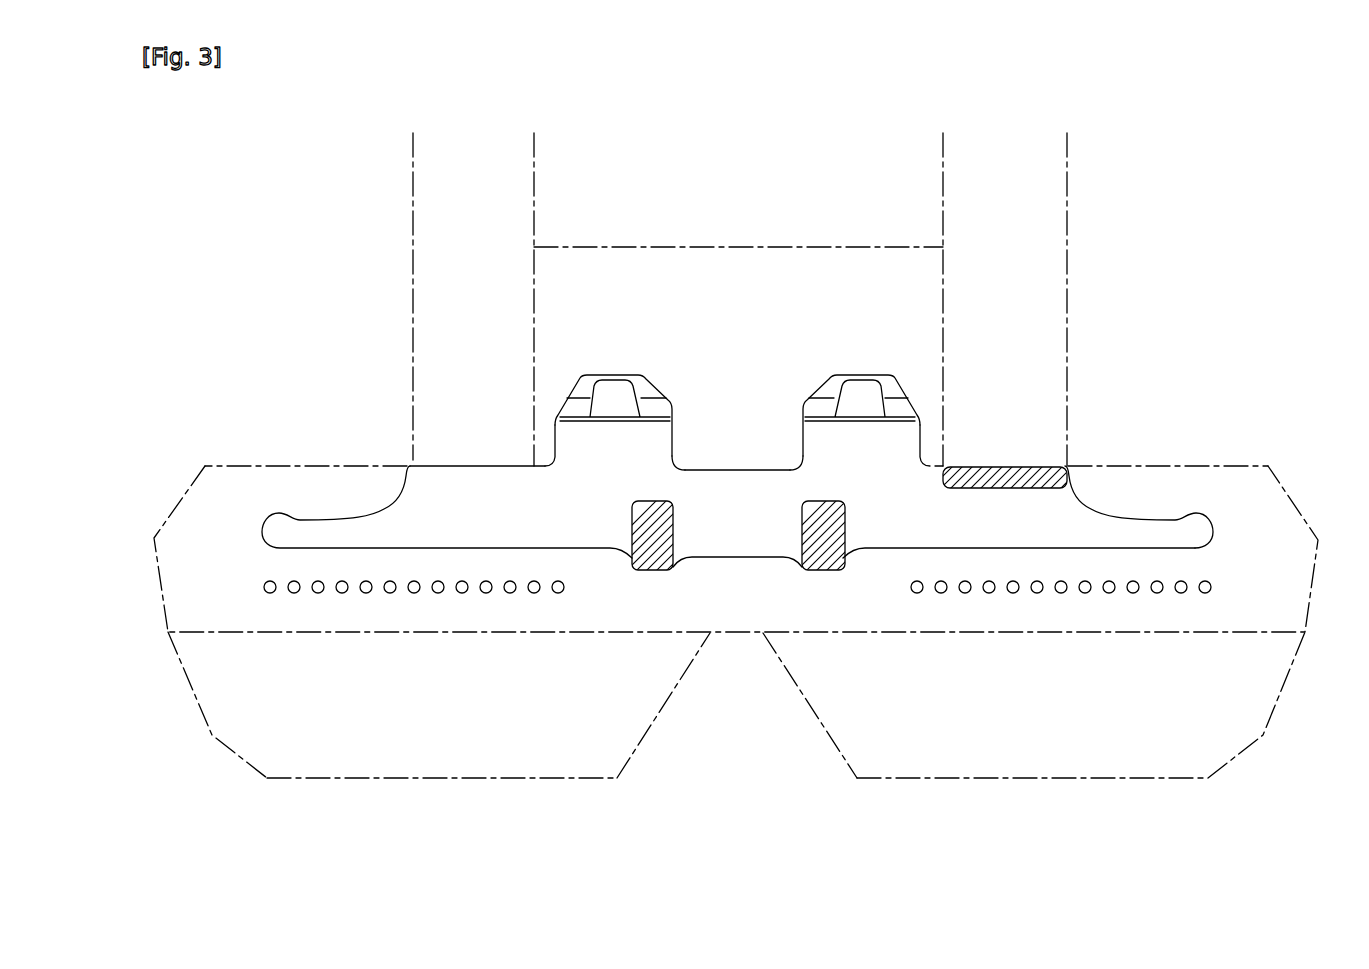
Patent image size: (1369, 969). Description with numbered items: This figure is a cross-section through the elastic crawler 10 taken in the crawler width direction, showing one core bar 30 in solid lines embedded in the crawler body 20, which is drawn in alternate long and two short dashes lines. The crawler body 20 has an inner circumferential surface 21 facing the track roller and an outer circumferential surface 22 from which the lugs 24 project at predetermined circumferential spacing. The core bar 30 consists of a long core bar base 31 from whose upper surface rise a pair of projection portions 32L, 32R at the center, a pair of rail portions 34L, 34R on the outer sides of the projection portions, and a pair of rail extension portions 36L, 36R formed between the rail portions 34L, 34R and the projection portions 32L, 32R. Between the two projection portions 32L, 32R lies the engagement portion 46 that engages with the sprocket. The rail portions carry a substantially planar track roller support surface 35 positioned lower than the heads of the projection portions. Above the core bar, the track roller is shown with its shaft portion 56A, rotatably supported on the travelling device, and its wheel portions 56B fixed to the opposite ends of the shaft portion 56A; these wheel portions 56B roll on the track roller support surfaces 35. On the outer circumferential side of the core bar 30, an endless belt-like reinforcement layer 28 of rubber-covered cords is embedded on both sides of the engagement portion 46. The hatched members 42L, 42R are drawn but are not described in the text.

The elastic crawler 10 is at (1145, 458).
The crawler body 20 is at (220, 458).
The inner circumferential surface 21 is at (284, 464).
The outer circumferential surface 22 is at (736, 744).
The lugs 24 is at (456, 780).
The reinforcement layer 28 is at (270, 594).
The core bar 30 is at (737, 419).
The core bar base 31 is at (1160, 518).
The projection portion 32L is at (606, 376).
The projection portion 32R is at (870, 376).
The rail portion 34L is at (453, 466).
The rail portion 34R is at (1022, 466).
The track roller support surface 35 is at (497, 466).
The rail extension portion 36L is at (541, 462).
The rail extension portion 36R is at (934, 462).
The left seal member 42L is at (662, 570).
The right seal member 42R is at (812, 570).
The engagement portion 46 is at (768, 478).
The shaft portion 56A is at (716, 246).
The wheel portions 56B is at (537, 172).